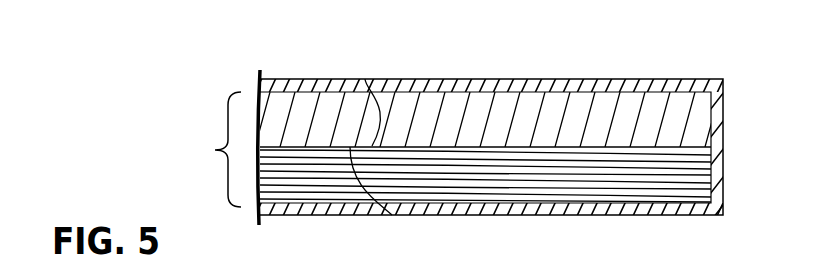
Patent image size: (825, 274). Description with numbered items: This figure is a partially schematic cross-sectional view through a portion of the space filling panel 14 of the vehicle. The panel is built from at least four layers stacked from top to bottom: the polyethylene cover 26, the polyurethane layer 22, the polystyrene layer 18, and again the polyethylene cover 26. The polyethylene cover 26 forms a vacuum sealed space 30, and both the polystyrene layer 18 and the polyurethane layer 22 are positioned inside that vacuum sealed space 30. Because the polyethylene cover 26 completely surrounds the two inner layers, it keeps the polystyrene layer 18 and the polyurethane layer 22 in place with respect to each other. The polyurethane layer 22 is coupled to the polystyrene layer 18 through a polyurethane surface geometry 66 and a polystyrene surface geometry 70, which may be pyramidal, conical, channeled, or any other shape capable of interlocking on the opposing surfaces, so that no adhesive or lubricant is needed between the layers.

The space filling panel 14 is at (482, 143).
The polyethylene cover 26 is at (681, 85).
The polyurethane layer 22 is at (686, 115).
The polystyrene layer 18 is at (678, 185).
The vacuum sealed space 30 is at (215, 150).
The polyurethane surface geometry 66 is at (365, 79).
The polystyrene surface geometry 70 is at (392, 215).